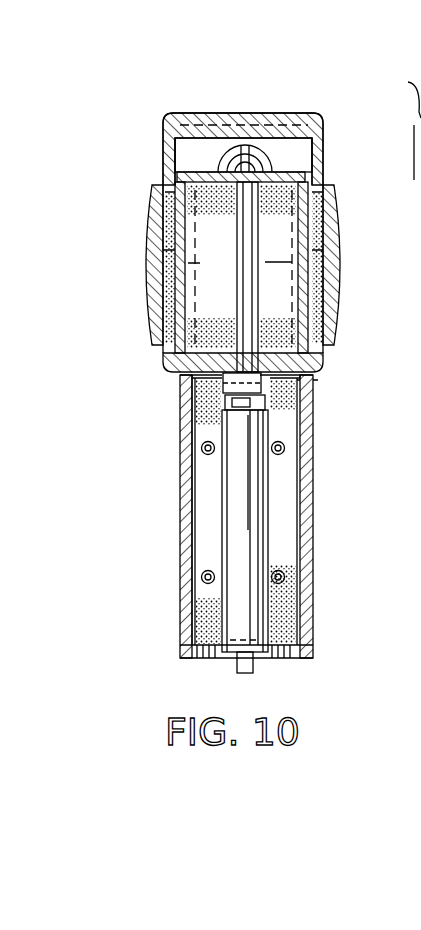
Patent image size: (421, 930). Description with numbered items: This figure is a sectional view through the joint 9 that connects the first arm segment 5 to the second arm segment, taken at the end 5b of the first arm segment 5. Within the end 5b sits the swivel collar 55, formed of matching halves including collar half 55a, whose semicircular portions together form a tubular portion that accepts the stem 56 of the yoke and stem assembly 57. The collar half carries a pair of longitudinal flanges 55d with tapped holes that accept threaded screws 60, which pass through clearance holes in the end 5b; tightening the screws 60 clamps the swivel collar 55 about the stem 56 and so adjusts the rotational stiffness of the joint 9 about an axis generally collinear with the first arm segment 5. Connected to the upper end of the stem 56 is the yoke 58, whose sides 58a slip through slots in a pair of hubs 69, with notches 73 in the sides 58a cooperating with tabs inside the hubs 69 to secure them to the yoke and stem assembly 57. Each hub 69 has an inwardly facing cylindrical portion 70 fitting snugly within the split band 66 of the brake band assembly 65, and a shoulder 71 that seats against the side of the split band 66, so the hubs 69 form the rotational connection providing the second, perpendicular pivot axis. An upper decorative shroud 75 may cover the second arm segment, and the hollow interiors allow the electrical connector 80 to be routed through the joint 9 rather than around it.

The first arm segment 5 is at (318, 592).
The end of first arm segment 5b is at (318, 387).
The joint 9 is at (162, 377).
The swivel collar 55 is at (185, 507).
The collar half 55a is at (310, 364).
The longitudinal flanges 55d is at (283, 509).
The stem 56 is at (237, 531).
The yoke and stem assembly 57 is at (185, 386).
The yoke 58 is at (168, 347).
The sides of yoke 58a is at (180, 276).
The threaded screws 60 is at (272, 455).
The brake band assembly 65 is at (293, 152).
The split band 66 is at (200, 165).
The hubs 69 is at (152, 204).
The inwardly facing cylindrical portion 70 is at (325, 140).
The shoulder 71 is at (187, 172).
The notches 73 is at (241, 267).
The upper decorative shroud 75 is at (258, 138).
The electrical connector 80 is at (258, 143).